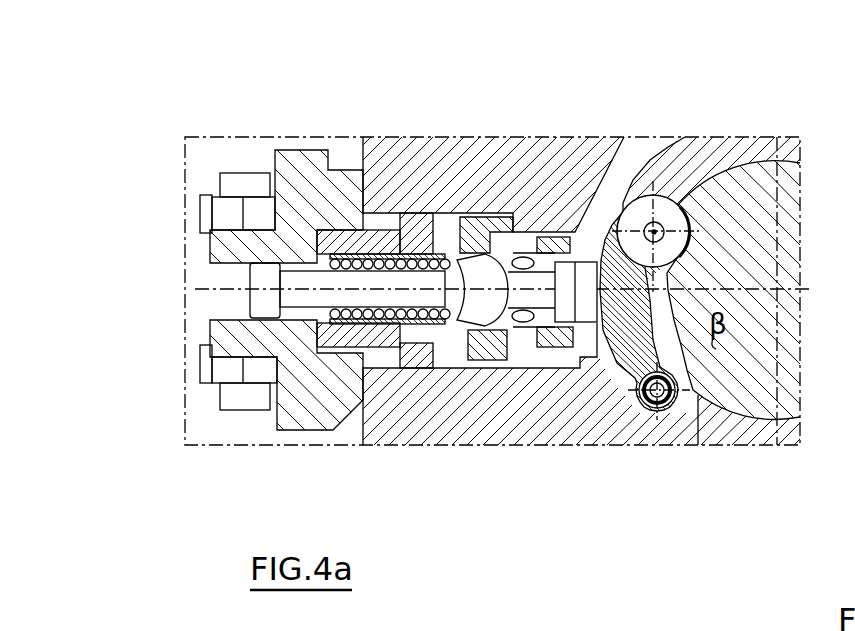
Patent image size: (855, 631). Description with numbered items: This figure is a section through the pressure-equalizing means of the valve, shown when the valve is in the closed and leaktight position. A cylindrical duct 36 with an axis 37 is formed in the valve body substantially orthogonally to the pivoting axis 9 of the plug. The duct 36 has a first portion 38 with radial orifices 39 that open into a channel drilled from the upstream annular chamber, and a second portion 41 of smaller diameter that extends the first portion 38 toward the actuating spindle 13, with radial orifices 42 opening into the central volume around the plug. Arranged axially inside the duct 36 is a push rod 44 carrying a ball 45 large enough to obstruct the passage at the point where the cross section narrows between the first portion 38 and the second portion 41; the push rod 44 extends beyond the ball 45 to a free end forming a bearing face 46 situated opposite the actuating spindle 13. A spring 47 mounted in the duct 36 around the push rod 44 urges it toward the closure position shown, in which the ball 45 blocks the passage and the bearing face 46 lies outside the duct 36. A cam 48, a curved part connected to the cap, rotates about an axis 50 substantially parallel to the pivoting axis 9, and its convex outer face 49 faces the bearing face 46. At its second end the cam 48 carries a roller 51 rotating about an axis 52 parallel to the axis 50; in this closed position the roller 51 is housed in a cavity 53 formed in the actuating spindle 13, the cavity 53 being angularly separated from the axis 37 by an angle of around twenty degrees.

The axis 37 is at (281, 230).
The cylindrical duct 36 is at (368, 188).
The first portion 38 is at (392, 199).
The radial orifices 39 is at (581, 237).
The radial orifices 42 is at (493, 195).
The second portion 41 is at (547, 176).
The axis 52 is at (654, 232).
The roller 51 is at (642, 205).
The cavity 53 is at (696, 199).
The actuating spindle 13 is at (790, 215).
The pivoting axis 9 is at (777, 292).
The push rod 44 is at (293, 280).
The spring 47 is at (364, 375).
The ball 45 is at (478, 375).
The bearing face 46 is at (538, 367).
The convex outer face 49 is at (572, 379).
The cam 48 is at (637, 355).
The axis 50 is at (659, 429).